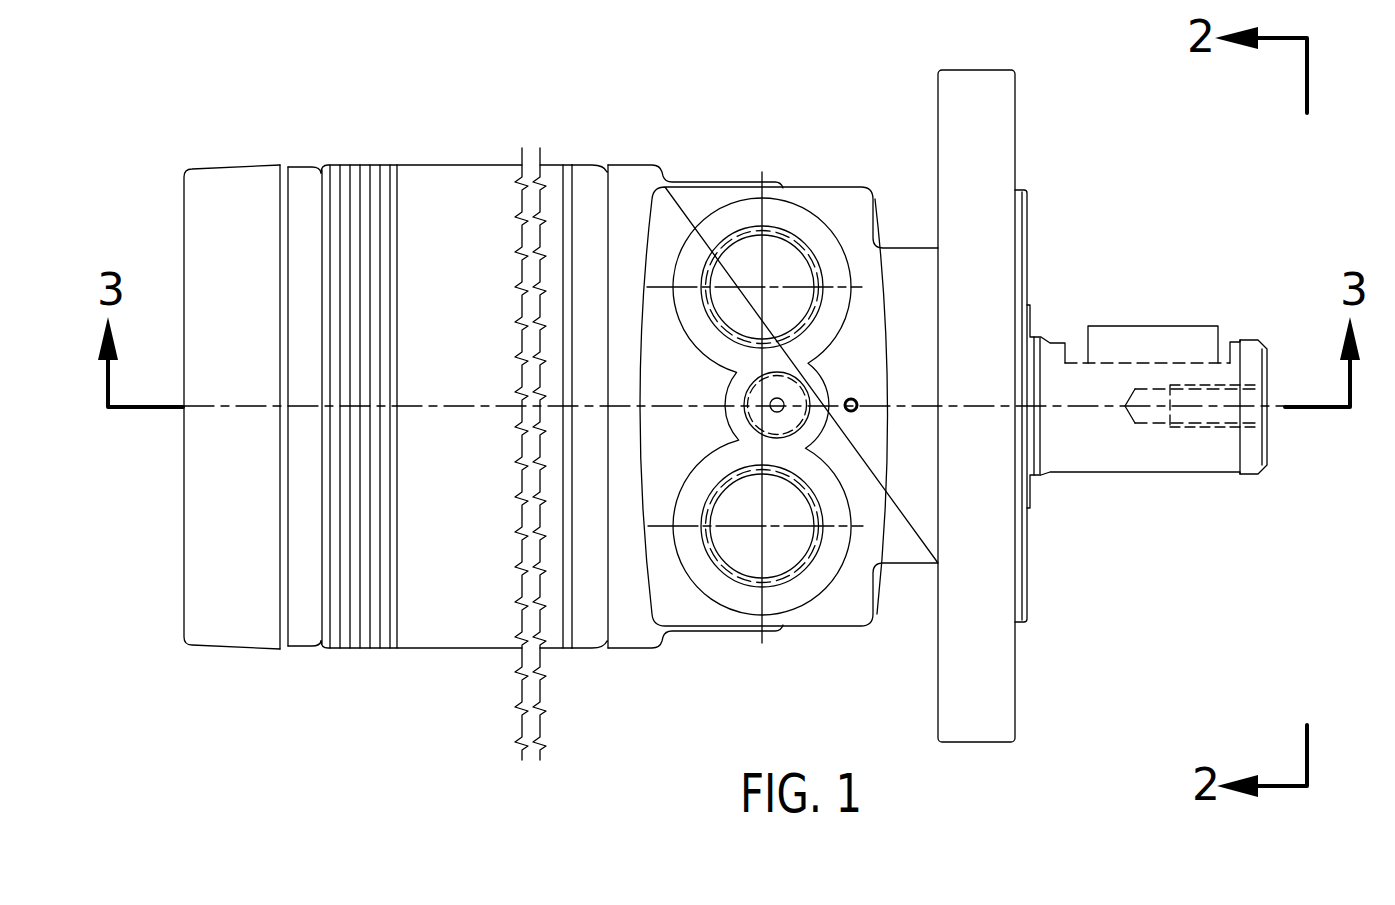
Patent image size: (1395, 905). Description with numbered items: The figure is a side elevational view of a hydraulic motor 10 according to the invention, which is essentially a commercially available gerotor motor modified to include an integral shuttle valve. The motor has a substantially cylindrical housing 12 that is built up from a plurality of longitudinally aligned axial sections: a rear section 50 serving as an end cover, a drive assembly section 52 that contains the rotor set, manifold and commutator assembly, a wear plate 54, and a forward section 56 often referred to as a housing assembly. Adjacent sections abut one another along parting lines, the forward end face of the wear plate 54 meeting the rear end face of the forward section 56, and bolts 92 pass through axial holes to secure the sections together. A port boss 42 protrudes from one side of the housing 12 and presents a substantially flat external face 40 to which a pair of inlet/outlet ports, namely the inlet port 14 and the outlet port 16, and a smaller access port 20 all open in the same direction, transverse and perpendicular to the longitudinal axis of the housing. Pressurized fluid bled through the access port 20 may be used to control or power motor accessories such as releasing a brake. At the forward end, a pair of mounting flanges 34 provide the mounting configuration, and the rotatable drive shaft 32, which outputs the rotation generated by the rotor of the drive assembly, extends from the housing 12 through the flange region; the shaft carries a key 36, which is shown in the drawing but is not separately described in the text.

The hydraulic motor 10 is at (1145, 136).
The housing 12 is at (426, 423).
The inlet port 14 is at (777, 262).
The outlet port 16 is at (777, 548).
The access port 20 is at (788, 442).
The drive shaft 32 is at (1147, 407).
The mounting flanges 34 is at (1020, 684).
The key 36 is at (1097, 405).
The external face 40 is at (708, 617).
The port boss 42 is at (853, 608).
The rear section 50 is at (280, 685).
The drive assembly section 52 is at (563, 685).
The wear plate 54 is at (591, 636).
The forward section 56 is at (630, 632).
The bolts 92 is at (853, 398).